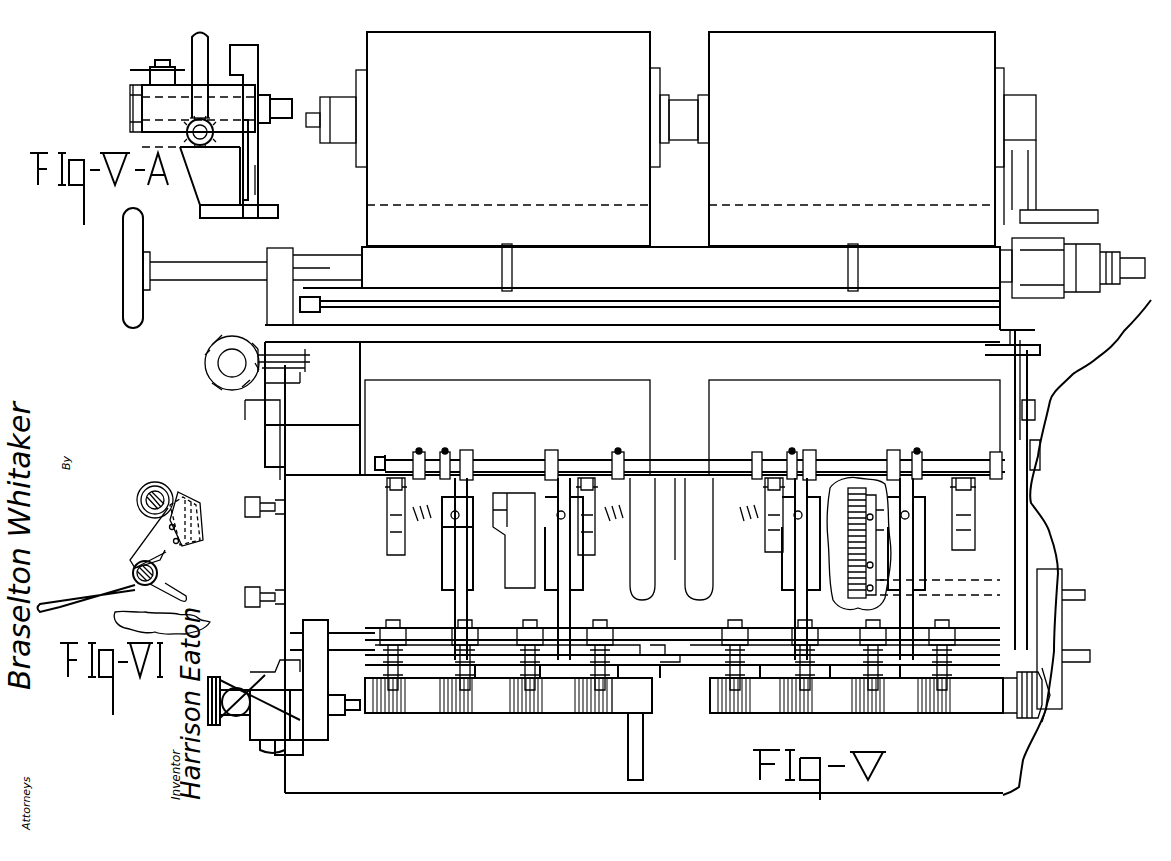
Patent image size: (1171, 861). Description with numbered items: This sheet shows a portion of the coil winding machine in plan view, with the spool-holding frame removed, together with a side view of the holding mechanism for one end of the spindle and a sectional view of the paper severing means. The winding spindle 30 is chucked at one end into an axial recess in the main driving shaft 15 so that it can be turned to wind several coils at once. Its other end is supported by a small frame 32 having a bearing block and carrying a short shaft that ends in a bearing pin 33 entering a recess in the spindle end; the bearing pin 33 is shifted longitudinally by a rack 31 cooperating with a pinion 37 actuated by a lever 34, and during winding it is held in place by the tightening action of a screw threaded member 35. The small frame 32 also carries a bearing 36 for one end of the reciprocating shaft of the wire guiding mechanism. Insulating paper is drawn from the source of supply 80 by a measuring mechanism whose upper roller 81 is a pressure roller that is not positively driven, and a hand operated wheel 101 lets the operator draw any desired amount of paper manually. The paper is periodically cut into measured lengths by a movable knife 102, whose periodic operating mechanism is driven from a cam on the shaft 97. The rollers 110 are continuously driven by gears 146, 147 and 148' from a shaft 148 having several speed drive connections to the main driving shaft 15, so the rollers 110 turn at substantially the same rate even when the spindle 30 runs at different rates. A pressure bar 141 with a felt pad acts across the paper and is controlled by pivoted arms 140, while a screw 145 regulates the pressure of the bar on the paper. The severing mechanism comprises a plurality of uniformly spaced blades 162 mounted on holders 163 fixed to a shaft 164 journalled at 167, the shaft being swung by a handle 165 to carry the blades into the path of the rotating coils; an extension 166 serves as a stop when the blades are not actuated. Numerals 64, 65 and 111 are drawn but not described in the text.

In FIG. 5, the main driving shaft 15 is at (1040, 713).
In FIG. 5, the winding spindle 30 is at (140, 492).
In FIG. 5A, the rack 31 is at (240, 125).
In FIG. 6, the rack 31 is at (340, 718).
In FIG. 5A, the small frame 32 is at (250, 212).
In FIG. 6, the small frame 32 is at (312, 741).
In FIG. 5A, the bearing pin 33 is at (280, 108).
In FIG. 6, the bearing pin 33 is at (337, 706).
In FIG. 5A, the lever 34 is at (193, 50).
In FIG. 6, the lever 34 is at (262, 742).
In FIG. 5A, the screw threaded member 35 is at (160, 70).
In FIG. 6, the screw threaded member 35 is at (230, 700).
In FIG. 5A, the bearing 36 is at (252, 52).
In FIG. 6, the bearing 36 is at (322, 635).
In FIG. 5A, the pinion 37 is at (198, 146).
In FIG. 5, the rail 64 is at (665, 633).
In FIG. 5, the valve unit 65 is at (470, 633).
In FIG. 5, the source of supply 80 is at (512, 103).
In FIG. 5, the upper roller 81 is at (916, 258).
In FIG. 5, the shaft 97 is at (1040, 437).
In FIG. 5, the hand operated wheel 101 is at (132, 328).
In FIG. 5, the movable knife 102 is at (818, 333).
In FIG. 5, the rollers 110 is at (777, 540).
In FIG. 5, the spray 111 is at (770, 517).
In FIG. 5, the arms 140 is at (455, 612).
In FIG. 5, the pressure bar 141 is at (640, 655).
In FIG. 5, the screw 145 is at (455, 515).
In FIG. 5, the gear 146 is at (855, 488).
In FIG. 5, the gear 147 is at (878, 560).
In FIG. 5, the shaft 148 is at (1079, 631).
In FIG. 5, the gear 148' is at (940, 595).
In FIG. 5, the blades 162 is at (180, 502).
In FIG. 5, the holders 163 is at (200, 528).
In FIG. 5, the shaft 164 is at (158, 574).
In FIG. 5, the handle 165 is at (44, 594).
In FIG. 5, the extension 166 is at (182, 596).
In FIG. 5A, the journal 167 is at (258, 182).